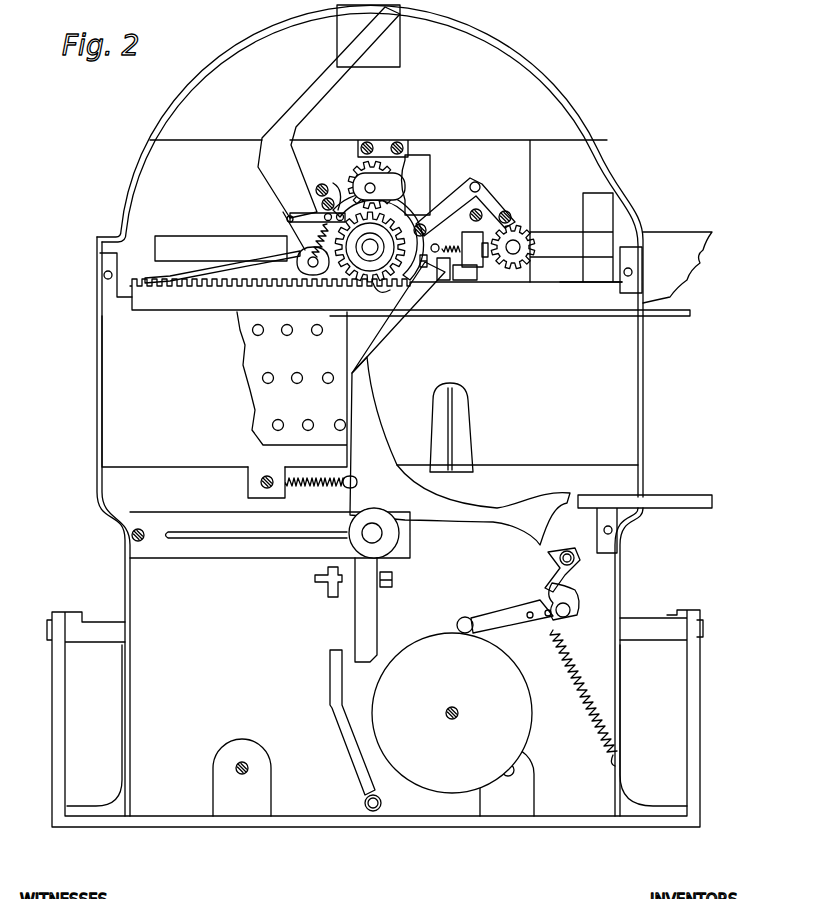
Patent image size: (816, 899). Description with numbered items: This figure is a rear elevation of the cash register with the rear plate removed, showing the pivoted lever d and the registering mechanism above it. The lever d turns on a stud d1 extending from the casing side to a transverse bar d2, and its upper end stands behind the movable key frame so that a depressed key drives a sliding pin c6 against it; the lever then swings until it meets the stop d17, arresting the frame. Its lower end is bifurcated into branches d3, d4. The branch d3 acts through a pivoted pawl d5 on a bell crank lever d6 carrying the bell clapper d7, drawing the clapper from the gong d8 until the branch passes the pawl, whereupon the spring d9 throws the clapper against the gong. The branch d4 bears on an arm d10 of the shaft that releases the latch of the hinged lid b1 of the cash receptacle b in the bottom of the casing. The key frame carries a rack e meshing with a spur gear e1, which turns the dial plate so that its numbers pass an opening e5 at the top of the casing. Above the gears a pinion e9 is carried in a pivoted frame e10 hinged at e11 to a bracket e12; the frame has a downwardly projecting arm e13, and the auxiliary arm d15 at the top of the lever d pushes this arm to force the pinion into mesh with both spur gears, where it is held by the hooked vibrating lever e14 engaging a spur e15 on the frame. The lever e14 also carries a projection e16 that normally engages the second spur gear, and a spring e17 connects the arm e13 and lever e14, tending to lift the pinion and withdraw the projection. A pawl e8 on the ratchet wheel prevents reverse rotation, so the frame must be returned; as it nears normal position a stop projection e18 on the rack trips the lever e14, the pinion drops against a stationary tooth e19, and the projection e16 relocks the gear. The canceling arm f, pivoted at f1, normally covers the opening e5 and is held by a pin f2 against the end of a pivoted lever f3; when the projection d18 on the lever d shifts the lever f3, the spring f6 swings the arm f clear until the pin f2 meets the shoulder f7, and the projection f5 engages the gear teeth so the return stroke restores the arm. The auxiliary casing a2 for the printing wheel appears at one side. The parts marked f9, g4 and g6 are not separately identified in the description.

The rack e is at (395, 284).
The spur gear e1 is at (337, 298).
The opening e5 is at (345, 37).
The pawl e8 is at (343, 195).
The pinion e9 is at (357, 170).
The pivoted frame e10 is at (432, 182).
The pivot e11 is at (497, 212).
The bracket e12 is at (473, 203).
The downwardly projecting arm e13 is at (470, 270).
The vibrating lever e14 is at (430, 172).
The projecting spur e15 is at (412, 162).
The projection e16 is at (450, 276).
The spring e17 is at (445, 243).
The stop projection e18 is at (455, 282).
The stationary tooth e19 is at (380, 165).
The canceling arm f is at (313, 95).
The pivot f1 is at (303, 257).
The pin f2 is at (283, 210).
The pivoted lever f3 is at (308, 198).
The projection f5 is at (328, 282).
The spring f6 is at (197, 273).
The shoulder f7 is at (292, 205).
The spring f9 is at (290, 270).
The pinion g4 is at (486, 262).
The pinion hub g6 is at (518, 268).
The auxiliary casing a2 is at (687, 232).
The sliding pin c6 is at (313, 336).
The pivoted lever d is at (460, 451).
The stud d1 is at (382, 537).
The transverse bar d2 is at (208, 547).
The branch d3 is at (535, 496).
The branch d4 is at (366, 622).
The pivoted pawl d5 is at (567, 567).
The bell crank lever d6 is at (563, 617).
The bell clapper d7 is at (470, 620).
The gong d8 is at (452, 713).
The spring d9 is at (587, 696).
The arm d10 is at (333, 678).
The auxiliary arm d15 is at (383, 330).
The stop d17 is at (333, 597).
The projection d18 is at (380, 291).
The cash receptacle b is at (643, 708).
The hinged lid b1 is at (636, 621).